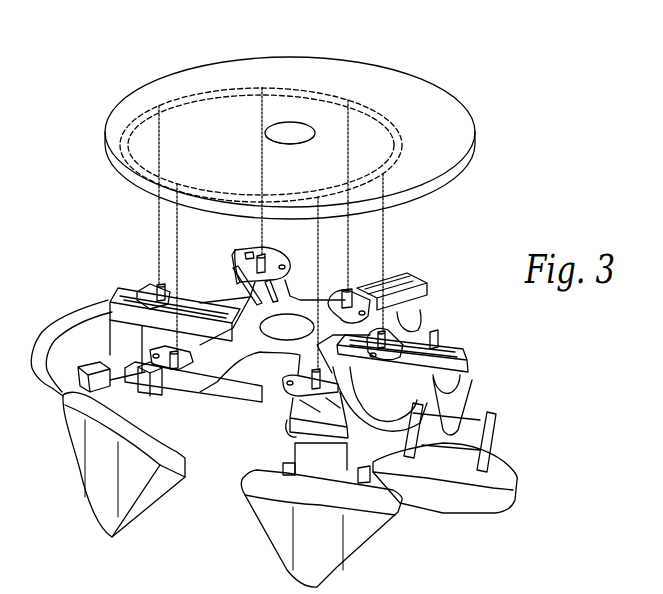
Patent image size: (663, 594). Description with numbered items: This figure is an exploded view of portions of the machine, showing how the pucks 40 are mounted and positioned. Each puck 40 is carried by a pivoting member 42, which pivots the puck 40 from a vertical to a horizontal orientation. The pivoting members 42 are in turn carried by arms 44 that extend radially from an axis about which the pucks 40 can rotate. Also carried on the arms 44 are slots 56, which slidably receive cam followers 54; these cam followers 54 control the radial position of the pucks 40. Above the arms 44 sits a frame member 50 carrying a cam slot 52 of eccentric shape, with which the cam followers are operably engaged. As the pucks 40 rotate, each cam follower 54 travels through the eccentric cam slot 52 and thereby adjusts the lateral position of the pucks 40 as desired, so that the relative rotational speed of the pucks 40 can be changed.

The puck 40 is at (498, 477).
The pivoting member 42 is at (463, 405).
The arm 44 is at (207, 302).
The frame member 50 is at (366, 80).
The cam slot 52 is at (392, 108).
The cam follower 54 is at (430, 337).
The slot 56 is at (392, 282).